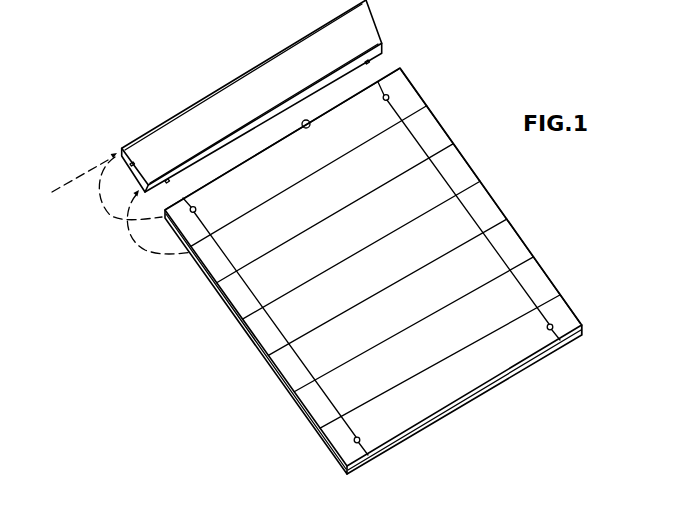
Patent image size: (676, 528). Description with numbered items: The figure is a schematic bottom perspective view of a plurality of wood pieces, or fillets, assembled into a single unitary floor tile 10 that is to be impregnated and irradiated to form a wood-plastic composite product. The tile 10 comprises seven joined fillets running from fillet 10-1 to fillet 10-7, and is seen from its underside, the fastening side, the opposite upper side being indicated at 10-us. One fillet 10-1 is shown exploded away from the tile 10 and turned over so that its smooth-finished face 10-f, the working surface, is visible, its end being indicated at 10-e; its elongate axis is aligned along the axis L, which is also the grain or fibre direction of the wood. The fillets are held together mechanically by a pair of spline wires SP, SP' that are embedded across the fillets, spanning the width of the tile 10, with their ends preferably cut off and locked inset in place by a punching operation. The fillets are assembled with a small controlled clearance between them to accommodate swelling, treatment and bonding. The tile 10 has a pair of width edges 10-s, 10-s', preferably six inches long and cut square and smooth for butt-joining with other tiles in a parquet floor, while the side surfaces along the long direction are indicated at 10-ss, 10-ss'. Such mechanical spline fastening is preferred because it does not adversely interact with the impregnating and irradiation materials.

The tile 10 is at (235, 333).
The fillet 10-1 is at (383, 36).
The fillet 10-7 is at (590, 302).
The smooth-finished face 10-f is at (248, 82).
The end of slat 10-e is at (130, 157).
The side surface 10-ss is at (464, 400).
The opposite side surface 10-ss' is at (282, 139).
The width edge 10-s is at (256, 341).
The width edge 10-s' is at (490, 196).
The upper surface of panel 10-us is at (381, 286).
The spline wire SP is at (275, 326).
The spline wire SP' is at (469, 211).
The axis L is at (114, 203).